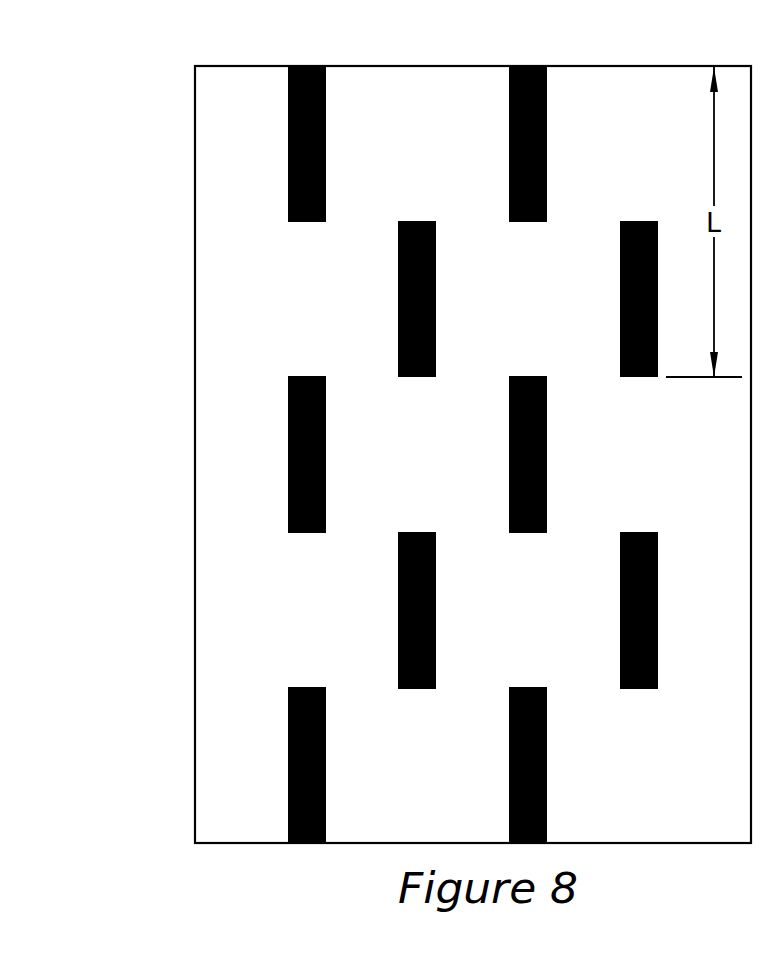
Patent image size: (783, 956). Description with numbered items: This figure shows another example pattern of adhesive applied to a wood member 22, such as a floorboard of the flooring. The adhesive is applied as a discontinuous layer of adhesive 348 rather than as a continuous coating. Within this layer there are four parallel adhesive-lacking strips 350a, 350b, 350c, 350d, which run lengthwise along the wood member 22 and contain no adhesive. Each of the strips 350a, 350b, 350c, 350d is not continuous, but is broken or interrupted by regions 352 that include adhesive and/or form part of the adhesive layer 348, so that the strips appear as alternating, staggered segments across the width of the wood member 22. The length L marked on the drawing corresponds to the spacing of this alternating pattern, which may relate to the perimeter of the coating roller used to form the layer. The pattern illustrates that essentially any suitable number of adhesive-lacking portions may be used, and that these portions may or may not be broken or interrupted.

The wood member 22 is at (160, 331).
The discontinuous layer of adhesive 348 is at (228, 255).
The adhesive-lacking strip 350a is at (308, 66).
The adhesive-lacking strip 350b is at (418, 221).
The adhesive-lacking strip 350c is at (529, 66).
The adhesive-lacking strip 350d is at (640, 221).
The regions 352 is at (305, 310).